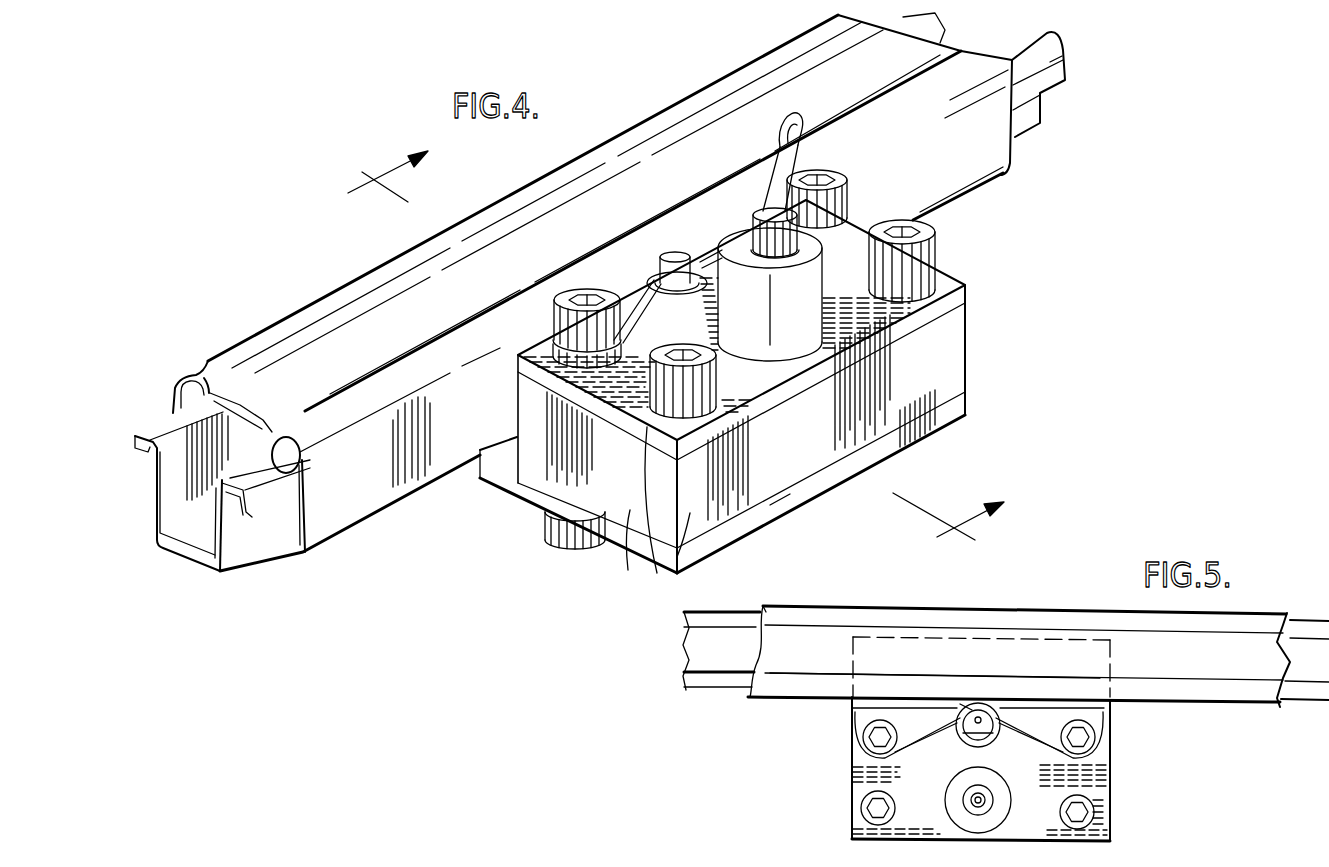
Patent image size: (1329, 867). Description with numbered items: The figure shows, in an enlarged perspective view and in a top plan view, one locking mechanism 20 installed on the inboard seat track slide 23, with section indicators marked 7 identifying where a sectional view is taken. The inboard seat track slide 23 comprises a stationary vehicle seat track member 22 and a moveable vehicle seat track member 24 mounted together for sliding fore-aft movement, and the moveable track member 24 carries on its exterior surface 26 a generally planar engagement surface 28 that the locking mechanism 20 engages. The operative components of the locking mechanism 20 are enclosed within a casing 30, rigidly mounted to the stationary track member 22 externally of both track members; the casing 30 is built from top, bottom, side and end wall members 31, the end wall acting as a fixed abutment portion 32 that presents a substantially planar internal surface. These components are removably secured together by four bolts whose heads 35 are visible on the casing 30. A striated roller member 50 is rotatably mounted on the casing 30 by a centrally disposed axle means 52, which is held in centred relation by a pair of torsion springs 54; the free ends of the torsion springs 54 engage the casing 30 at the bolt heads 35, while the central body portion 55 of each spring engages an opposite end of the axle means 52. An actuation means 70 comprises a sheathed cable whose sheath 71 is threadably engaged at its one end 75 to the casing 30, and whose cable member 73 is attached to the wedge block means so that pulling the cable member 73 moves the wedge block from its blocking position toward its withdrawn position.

In FIG. 4, the section line 7- 7 is at (676, 356).
In FIG. 4, the locking mechanism 20 is at (990, 323).
In FIG. 5, the locking mechanism 20 is at (1160, 785).
In FIG. 4, the stationary vehicle seat track member 22 is at (182, 556).
In FIG. 5, the stationary vehicle seat track member 22 is at (705, 612).
In FIG. 4, the inboard seat track slide 23 is at (168, 402).
In FIG. 5, the inboard seat track slide 23 is at (768, 610).
In FIG. 4, the moveable vehicle seat track member 24 is at (257, 334).
In FIG. 5, the moveable vehicle seat track member 24 is at (856, 606).
In FIG. 4, the exterior surface 26 is at (370, 498).
In FIG. 5, the exterior surface 26 is at (770, 699).
In FIG. 4, the generally planar engagement surface 28 is at (897, 193).
In FIG. 5, the generally planar engagement surface 28 is at (857, 700).
In FIG. 4, the casing 30 is at (965, 415).
In FIG. 5, the casing 30 is at (1110, 840).
In FIG. 4, the wall members 31 is at (660, 563).
In FIG. 4, the fixed abutment portion 32 is at (797, 470).
In FIG. 4, the heads of bolts 35 is at (556, 318).
In FIG. 5, the heads of bolts 35 is at (862, 800).
In FIG. 5, the striated roller member 50 is at (963, 704).
In FIG. 4, the axle means 52 is at (670, 254).
In FIG. 5, the axle means 52 is at (990, 700).
In FIG. 4, the torsion springs 54 is at (647, 287).
In FIG. 5, the torsion springs 54 is at (937, 743).
In FIG. 4, the central body portion 55 is at (700, 295).
In FIG. 4, the actuation means 70 is at (766, 152).
In FIG. 5, the actuation means 70 is at (995, 800).
In FIG. 4, the sheath 71 is at (802, 153).
In FIG. 5, the sheath 71 is at (968, 803).
In FIG. 4, the cable member 73 is at (792, 112).
In FIG. 5, the cable member 73 is at (987, 813).
In FIG. 4, the one end of the sheath 75 is at (755, 212).
In FIG. 5, the one end of the sheath 75 is at (988, 790).